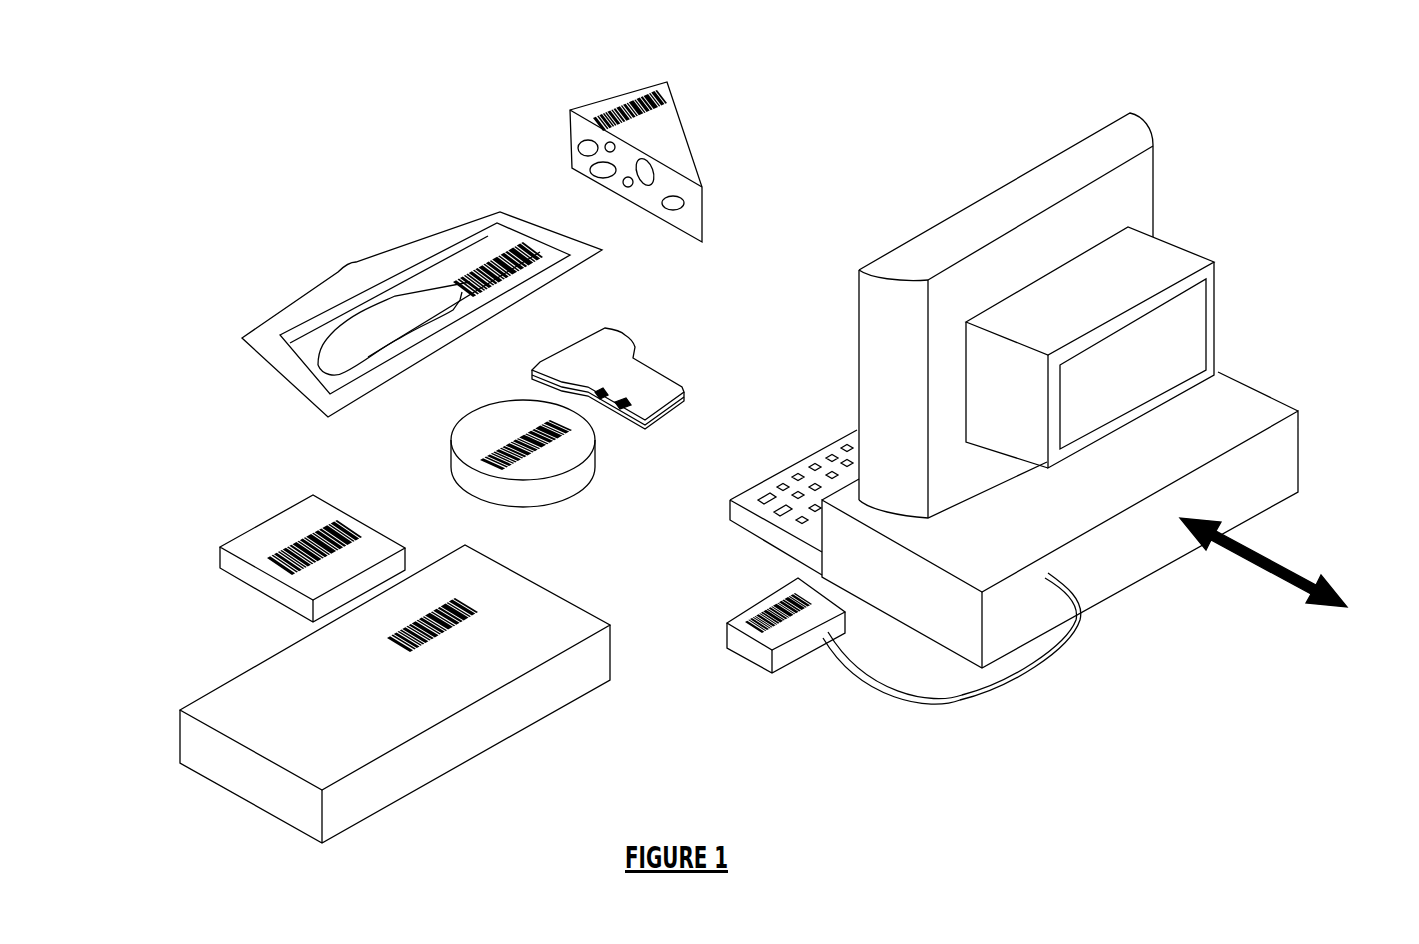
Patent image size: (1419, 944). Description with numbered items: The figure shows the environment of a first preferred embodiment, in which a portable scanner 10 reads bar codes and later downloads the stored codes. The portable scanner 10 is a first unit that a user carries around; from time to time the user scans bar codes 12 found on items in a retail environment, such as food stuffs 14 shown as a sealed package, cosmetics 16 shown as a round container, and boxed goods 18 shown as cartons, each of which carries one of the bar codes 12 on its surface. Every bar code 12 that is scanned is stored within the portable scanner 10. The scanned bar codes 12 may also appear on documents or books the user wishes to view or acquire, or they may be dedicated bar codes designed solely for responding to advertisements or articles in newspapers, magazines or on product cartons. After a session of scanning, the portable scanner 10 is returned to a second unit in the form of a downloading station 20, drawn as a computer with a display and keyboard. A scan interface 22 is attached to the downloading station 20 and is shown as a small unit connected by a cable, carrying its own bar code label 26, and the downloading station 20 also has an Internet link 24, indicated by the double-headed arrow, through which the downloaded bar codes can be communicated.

The portable scanner 10 is at (645, 387).
The bar codes 12 is at (622, 103).
The food stuffs 14 is at (542, 275).
The cosmetics 16 is at (588, 442).
The boxed goods 18 is at (257, 692).
The downloading station 20 is at (992, 217).
The scan interface 22 is at (743, 648).
The Internet link 24 is at (1285, 554).
The bar code label on cradle 26 is at (757, 610).